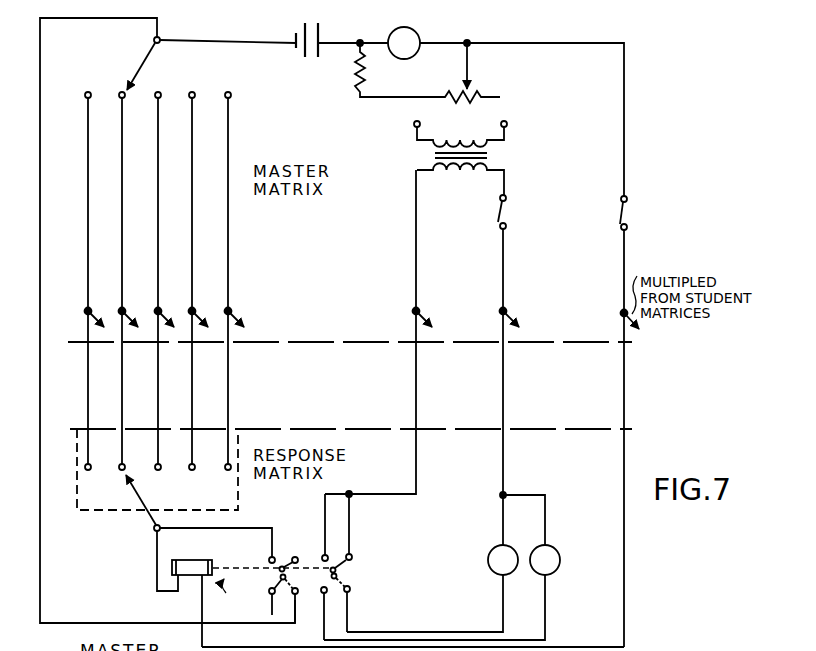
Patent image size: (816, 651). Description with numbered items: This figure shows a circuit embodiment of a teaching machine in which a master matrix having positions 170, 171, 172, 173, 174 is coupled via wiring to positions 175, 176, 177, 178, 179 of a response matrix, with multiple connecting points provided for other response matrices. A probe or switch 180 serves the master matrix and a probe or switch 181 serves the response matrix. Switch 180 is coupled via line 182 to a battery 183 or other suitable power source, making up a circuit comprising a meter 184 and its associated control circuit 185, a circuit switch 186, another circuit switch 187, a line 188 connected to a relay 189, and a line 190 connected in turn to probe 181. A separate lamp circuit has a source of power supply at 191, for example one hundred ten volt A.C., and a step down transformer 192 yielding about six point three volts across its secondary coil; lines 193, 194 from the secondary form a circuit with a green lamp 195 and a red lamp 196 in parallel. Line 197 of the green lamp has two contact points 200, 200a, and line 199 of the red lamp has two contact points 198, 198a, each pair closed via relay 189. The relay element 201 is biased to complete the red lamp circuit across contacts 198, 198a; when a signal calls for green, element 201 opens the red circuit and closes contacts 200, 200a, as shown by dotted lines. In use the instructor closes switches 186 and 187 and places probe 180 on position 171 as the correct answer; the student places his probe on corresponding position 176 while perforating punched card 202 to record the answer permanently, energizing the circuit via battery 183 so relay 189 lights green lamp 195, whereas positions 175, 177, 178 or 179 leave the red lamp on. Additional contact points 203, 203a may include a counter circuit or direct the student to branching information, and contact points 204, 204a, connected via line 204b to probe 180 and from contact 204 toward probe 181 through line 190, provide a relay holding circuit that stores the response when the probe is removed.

The master matrix position 170 is at (86, 98).
The master matrix position 171 is at (124, 98).
The master matrix position 172 is at (160, 98).
The master matrix position 173 is at (194, 98).
The master matrix position 174 is at (230, 98).
The response matrix position 175 is at (85, 465).
The response matrix position 176 is at (120, 465).
The response matrix position 177 is at (156, 465).
The response matrix position 178 is at (190, 465).
The response matrix position 179 is at (226, 465).
The probe or switch 180 is at (147, 53).
The probe or switch 181 is at (134, 485).
The line 182 is at (195, 40).
The battery 183 is at (319, 38).
The meter 184 is at (417, 39).
The control circuit 185 is at (393, 82).
The circuit switch 186 is at (627, 211).
The circuit switch 187 is at (507, 222).
The line 188 is at (626, 380).
The relay 189 is at (192, 592).
The line 190 is at (156, 548).
The source of power supply 191 is at (500, 124).
The step down transformer 192 is at (430, 155).
The line 193 is at (415, 373).
The line 194 is at (505, 378).
The green lamp 195 is at (513, 571).
The red lamp 196 is at (552, 572).
The line 197 is at (430, 631).
The contact point 198 is at (350, 555).
The contact point 198a is at (326, 593).
The line 199 is at (547, 622).
The contact point 200 is at (328, 556).
The contact point 200a is at (349, 590).
The relay element 201 is at (273, 586).
The punched card 202 is at (77, 502).
The additional contact point 203 is at (296, 556).
The additional contact point 203a is at (270, 593).
The contact point 204 is at (268, 559).
The contact point 204a is at (292, 604).
The line 204b is at (72, 19).